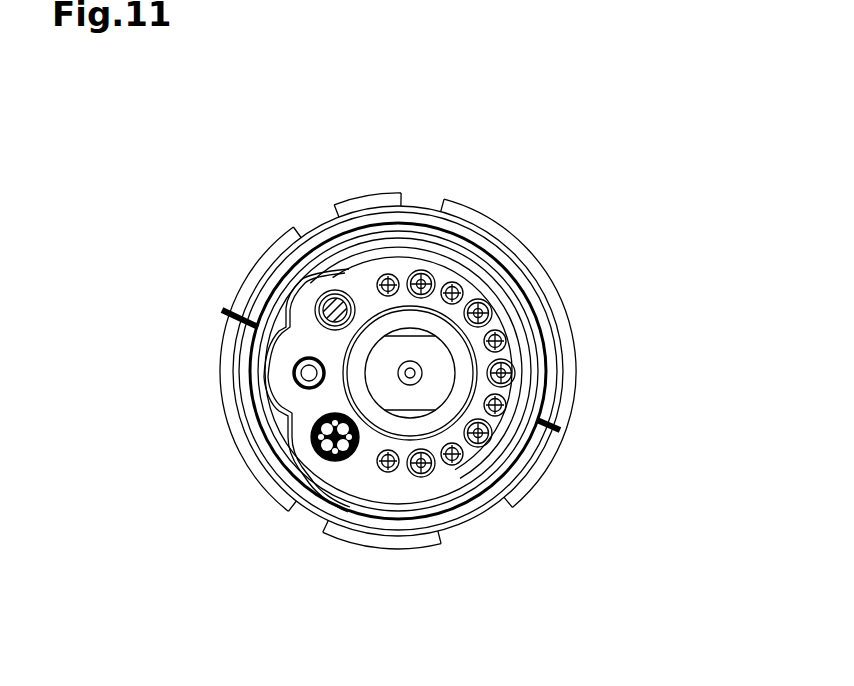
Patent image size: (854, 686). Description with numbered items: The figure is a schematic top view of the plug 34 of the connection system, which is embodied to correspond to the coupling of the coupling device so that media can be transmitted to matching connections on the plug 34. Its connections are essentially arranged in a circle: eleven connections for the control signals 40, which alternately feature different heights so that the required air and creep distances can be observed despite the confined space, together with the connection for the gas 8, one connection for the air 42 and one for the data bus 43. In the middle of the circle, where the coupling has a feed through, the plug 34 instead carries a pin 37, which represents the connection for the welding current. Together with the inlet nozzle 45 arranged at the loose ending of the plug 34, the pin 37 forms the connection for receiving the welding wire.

The plug 34 is at (569, 160).
The pin 37 is at (383, 328).
The control signals 40 is at (453, 284).
The air 42 is at (316, 308).
The gas 8 is at (309, 373).
The inlet nozzle 45 is at (382, 383).
The data bus 43 is at (315, 456).